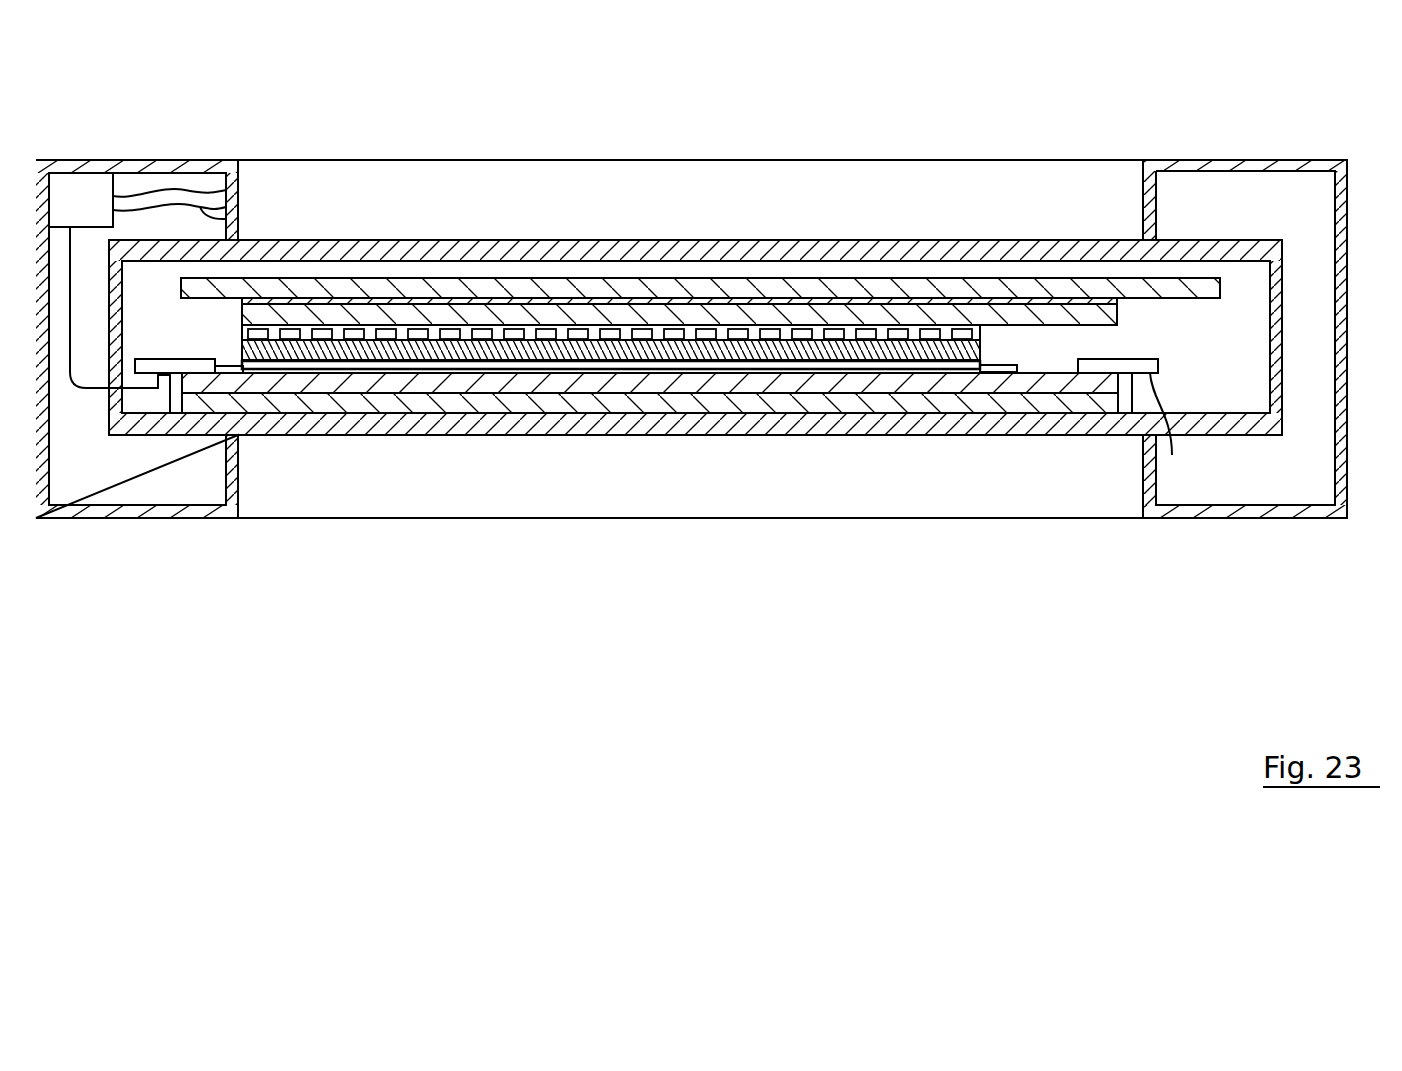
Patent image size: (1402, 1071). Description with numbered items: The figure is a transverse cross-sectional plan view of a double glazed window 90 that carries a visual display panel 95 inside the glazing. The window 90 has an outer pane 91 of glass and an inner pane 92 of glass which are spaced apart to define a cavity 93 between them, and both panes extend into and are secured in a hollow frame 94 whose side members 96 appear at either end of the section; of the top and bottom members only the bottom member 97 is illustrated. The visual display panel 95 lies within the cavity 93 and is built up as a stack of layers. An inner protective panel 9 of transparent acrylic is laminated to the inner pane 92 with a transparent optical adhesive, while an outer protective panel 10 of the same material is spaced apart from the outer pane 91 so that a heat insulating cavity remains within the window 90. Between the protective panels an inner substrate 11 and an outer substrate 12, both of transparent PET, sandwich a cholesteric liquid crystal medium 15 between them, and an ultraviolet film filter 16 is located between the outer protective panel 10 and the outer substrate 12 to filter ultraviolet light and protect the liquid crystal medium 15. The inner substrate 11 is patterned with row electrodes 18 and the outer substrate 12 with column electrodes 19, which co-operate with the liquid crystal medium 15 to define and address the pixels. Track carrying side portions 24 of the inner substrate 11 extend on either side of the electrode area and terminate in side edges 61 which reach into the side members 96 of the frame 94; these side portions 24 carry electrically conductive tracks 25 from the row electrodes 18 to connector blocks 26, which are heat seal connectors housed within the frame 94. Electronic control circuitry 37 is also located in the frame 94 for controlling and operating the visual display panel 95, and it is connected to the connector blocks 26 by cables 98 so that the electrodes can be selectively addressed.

The inner protective panel 9 is at (600, 400).
The outer protective panel 10 is at (1010, 285).
The inner substrate 11 is at (815, 372).
The outer substrate 12 is at (752, 315).
The cholesteric liquid crystal medium 15 is at (912, 352).
The ultraviolet film filter 16 is at (668, 300).
The row electrodes 18 is at (428, 372).
The column electrodes 19 is at (860, 337).
The track carrying side portions 24 is at (223, 387).
The electrically conductive tracks 25 is at (232, 373).
The connector blocks 26 is at (168, 375).
The electronic control circuitry 37 is at (93, 185).
The side edges 61 is at (178, 378).
The window 90 is at (370, 583).
The outer pane 91 is at (679, 250).
The inner pane 92 is at (520, 420).
The cavity 93 is at (473, 267).
The hollow frame 94 is at (1192, 520).
The visual display panel 95 is at (920, 270).
The side members 96 is at (67, 160).
The bottom member 97 is at (367, 170).
The cables 98 is at (183, 192).